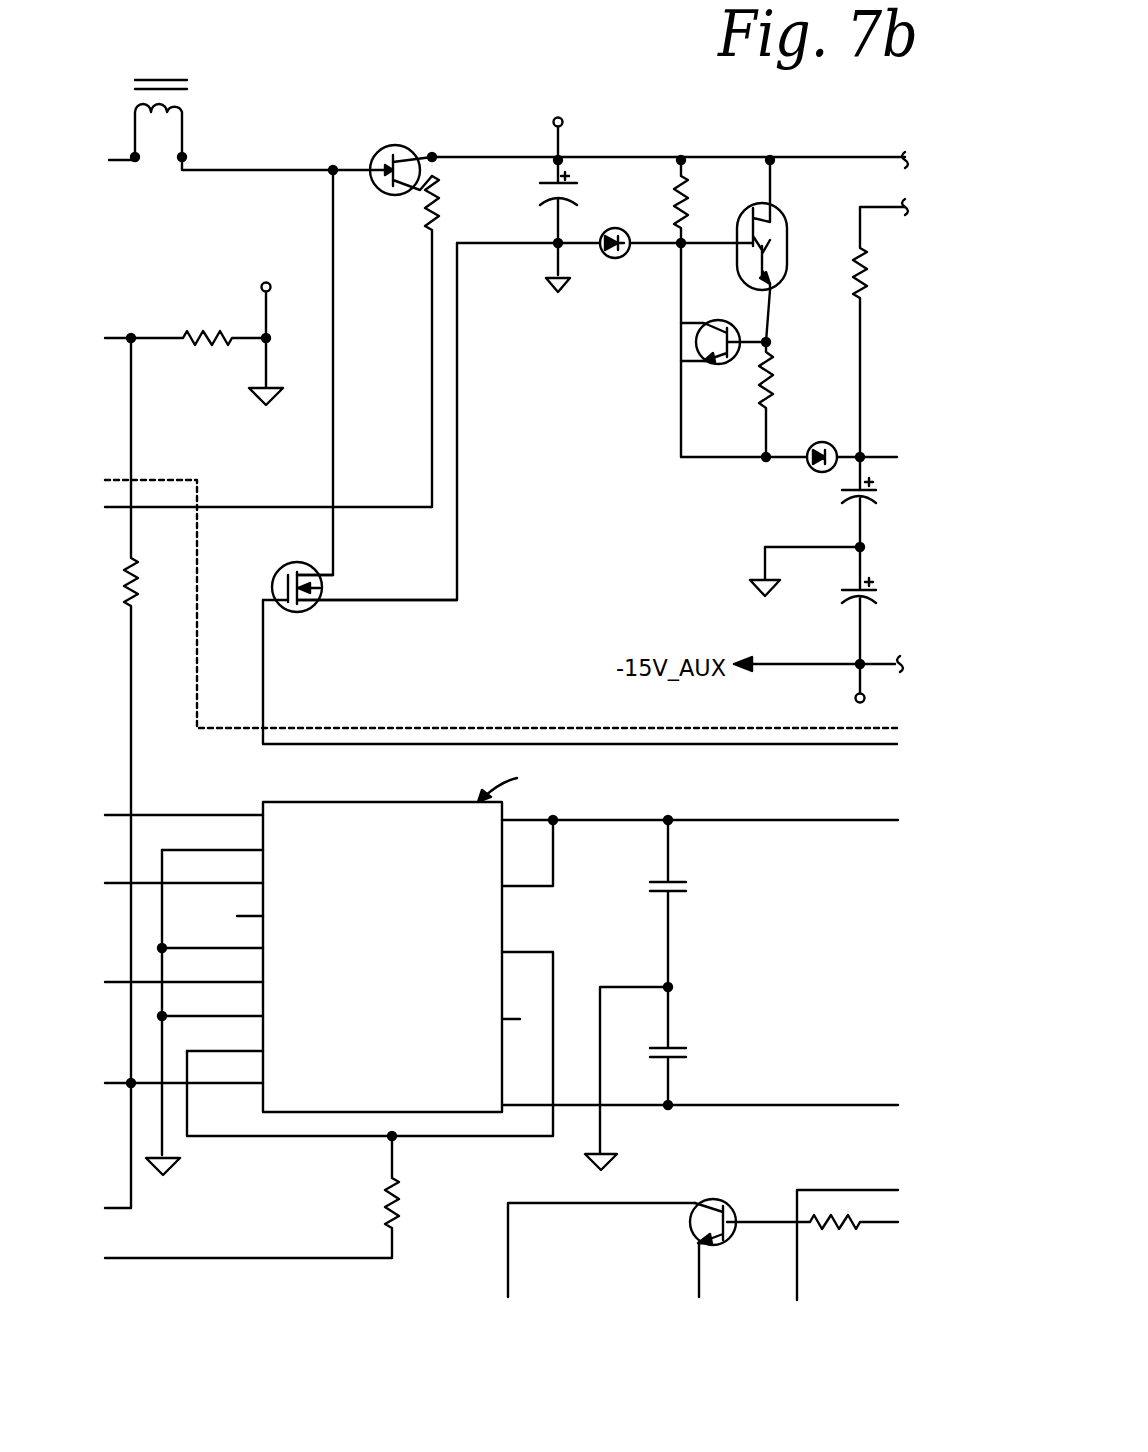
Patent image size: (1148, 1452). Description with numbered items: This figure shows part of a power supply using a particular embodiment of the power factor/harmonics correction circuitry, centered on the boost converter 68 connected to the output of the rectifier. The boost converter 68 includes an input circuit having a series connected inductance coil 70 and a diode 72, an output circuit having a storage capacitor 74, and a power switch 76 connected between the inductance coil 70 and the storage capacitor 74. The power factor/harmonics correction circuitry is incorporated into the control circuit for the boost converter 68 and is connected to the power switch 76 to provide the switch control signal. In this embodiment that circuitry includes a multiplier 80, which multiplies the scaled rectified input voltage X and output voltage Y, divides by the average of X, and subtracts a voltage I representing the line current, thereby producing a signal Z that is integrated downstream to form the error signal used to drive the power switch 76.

The boost converter 68 is at (617, 97).
The inductance coil 70 is at (182, 110).
The diode 72 is at (380, 148).
The storage capacitor 74 is at (580, 182).
The power switch 76 is at (302, 612).
The multiplier 80 is at (280, 800).